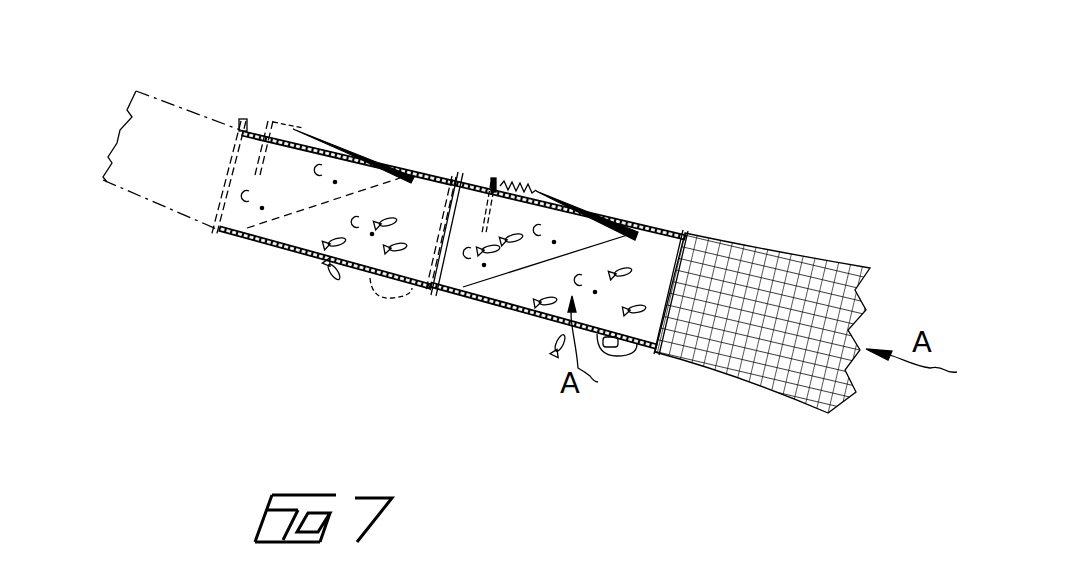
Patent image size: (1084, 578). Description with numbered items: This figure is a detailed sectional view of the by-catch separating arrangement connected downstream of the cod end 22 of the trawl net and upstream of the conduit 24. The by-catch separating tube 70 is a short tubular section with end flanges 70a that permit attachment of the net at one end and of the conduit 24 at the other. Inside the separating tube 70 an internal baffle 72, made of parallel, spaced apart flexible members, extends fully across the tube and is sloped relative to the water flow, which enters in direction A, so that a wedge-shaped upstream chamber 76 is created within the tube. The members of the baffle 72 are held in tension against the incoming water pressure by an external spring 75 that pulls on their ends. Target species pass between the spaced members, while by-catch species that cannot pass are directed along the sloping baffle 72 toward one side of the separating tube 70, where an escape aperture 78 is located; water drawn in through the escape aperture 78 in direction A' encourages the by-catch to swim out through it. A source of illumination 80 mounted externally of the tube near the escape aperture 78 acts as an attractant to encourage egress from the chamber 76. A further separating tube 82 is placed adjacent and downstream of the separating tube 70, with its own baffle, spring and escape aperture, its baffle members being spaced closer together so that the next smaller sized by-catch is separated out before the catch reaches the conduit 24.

The cod end 22 is at (768, 264).
The conduit 24 is at (144, 114).
The by-catch separating tube 70 is at (468, 300).
The end flanges 70a is at (436, 298).
The internal baffle 72 is at (608, 244).
The external spring 75 is at (528, 190).
The upstream chamber 76 is at (653, 270).
The escape aperture 78 is at (348, 272).
The source of illumination 80 is at (375, 296).
The separating tube 82 is at (248, 236).